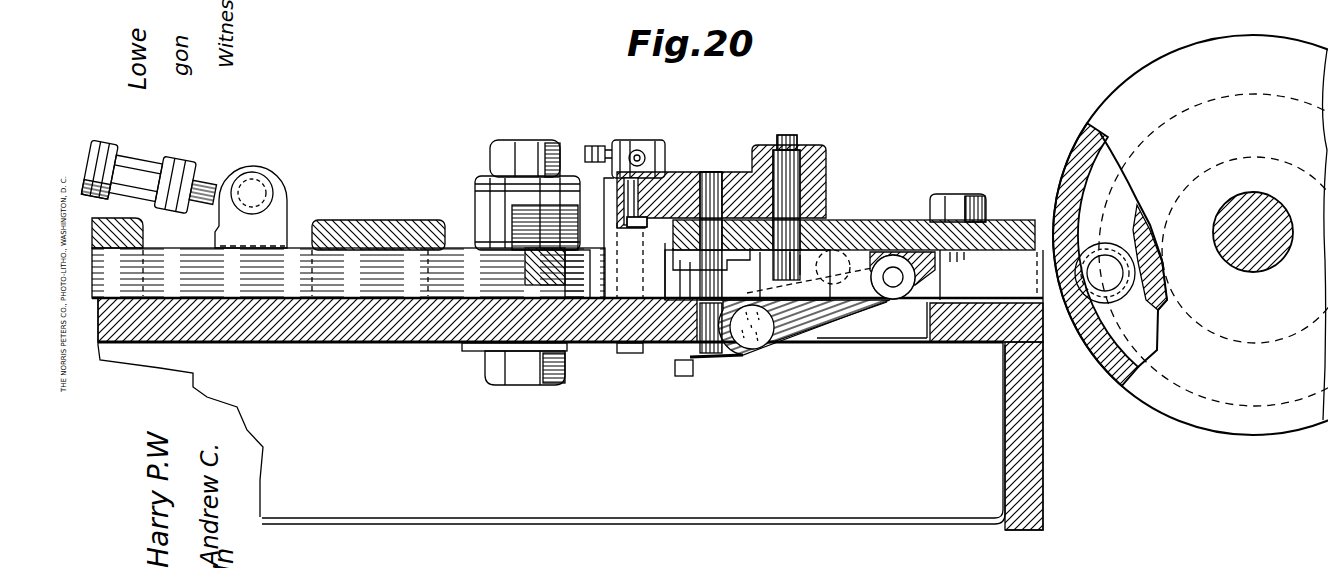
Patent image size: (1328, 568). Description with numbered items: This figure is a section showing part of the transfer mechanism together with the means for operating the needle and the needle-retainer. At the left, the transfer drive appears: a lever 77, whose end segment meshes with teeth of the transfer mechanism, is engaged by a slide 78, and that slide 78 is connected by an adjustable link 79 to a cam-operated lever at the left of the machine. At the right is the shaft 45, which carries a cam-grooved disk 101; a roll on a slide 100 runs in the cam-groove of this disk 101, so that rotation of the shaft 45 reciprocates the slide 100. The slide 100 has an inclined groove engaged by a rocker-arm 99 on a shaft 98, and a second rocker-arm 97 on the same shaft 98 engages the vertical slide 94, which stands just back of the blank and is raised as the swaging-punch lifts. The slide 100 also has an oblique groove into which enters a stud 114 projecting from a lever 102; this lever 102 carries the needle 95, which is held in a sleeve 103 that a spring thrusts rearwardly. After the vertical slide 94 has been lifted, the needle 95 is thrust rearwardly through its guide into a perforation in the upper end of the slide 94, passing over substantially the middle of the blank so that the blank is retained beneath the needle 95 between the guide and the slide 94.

The shaft 45 is at (1214, 218).
The lever 77 is at (486, 213).
The slide 78 is at (567, 273).
The adjustable link 79 is at (150, 179).
The vertical slide 94 is at (634, 354).
The needle 95 is at (662, 150).
The rocker-arm 97 is at (713, 358).
The shaft 98 is at (750, 350).
The rocker-arm 99 is at (806, 338).
The slide 100 is at (953, 275).
The disk 101 is at (1190, 235).
The lever 102 is at (672, 178).
The sleeve 103 is at (640, 142).
The stud 114 is at (715, 258).